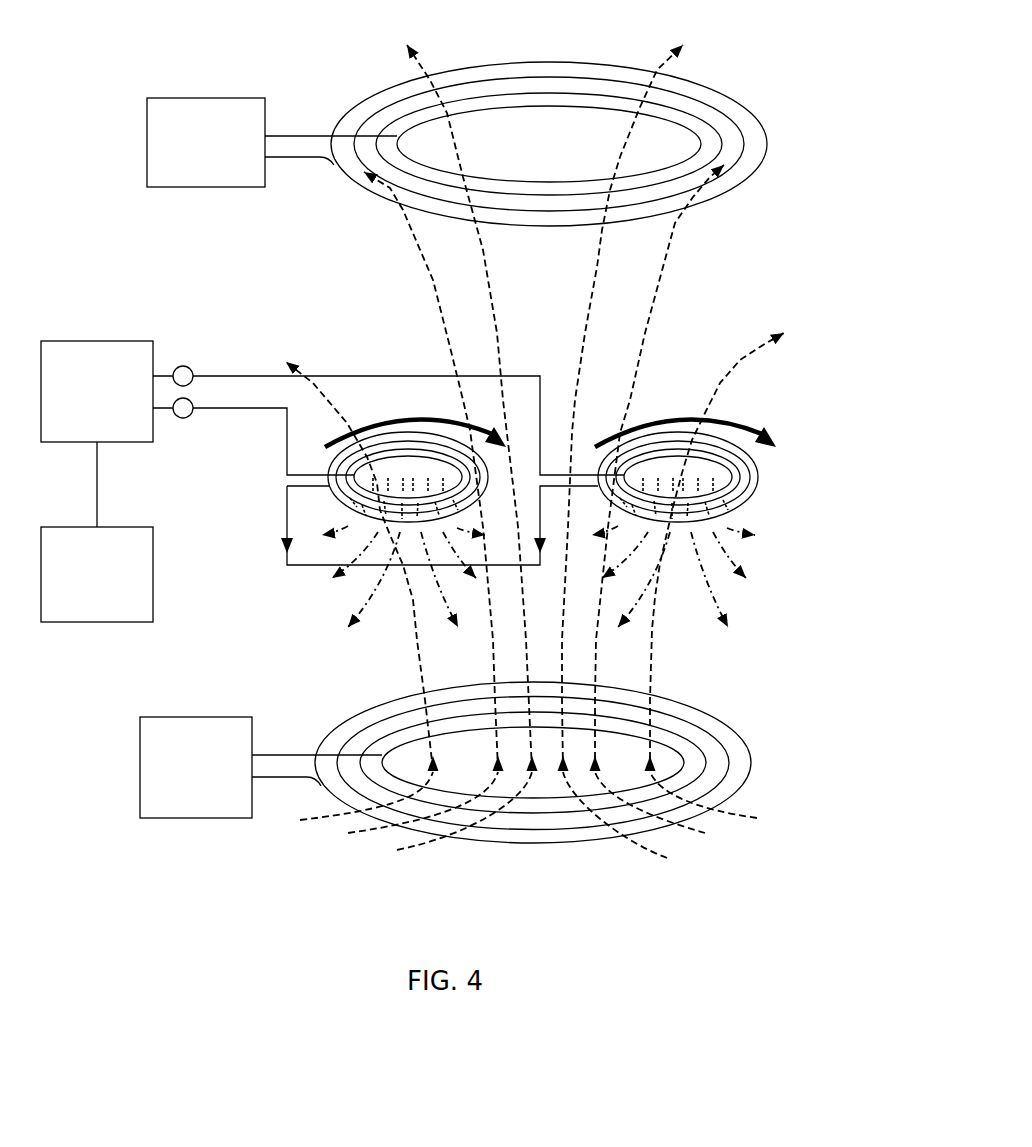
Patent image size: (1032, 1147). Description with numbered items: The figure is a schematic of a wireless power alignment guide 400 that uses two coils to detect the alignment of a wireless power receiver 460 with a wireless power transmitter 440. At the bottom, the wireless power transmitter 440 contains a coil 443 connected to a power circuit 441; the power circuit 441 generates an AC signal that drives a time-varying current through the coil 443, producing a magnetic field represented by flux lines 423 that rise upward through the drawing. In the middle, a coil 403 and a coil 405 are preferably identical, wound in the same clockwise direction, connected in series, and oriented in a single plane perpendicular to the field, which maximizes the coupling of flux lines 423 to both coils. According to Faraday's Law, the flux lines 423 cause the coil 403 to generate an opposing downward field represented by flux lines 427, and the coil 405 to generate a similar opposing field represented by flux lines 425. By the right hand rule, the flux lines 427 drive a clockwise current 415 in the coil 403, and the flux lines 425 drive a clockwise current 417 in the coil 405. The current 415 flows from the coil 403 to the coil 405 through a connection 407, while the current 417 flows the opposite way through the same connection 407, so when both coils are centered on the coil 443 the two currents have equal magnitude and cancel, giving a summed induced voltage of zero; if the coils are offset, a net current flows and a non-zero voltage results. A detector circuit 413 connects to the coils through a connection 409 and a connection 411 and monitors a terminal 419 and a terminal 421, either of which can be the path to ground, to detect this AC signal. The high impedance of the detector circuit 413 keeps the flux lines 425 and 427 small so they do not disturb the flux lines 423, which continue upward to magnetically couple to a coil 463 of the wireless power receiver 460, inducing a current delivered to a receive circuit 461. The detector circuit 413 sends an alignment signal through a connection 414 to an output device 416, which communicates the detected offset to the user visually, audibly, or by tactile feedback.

The wireless power alignment guide 400 is at (150, 296).
The coil 403 is at (340, 505).
The coil 405 is at (756, 496).
The connection 407 is at (283, 540).
The connection 409 is at (241, 410).
The connection 411 is at (232, 376).
The detector circuit 413 is at (142, 443).
The connection 414 is at (97, 504).
The current 415 is at (372, 420).
The output device 416 is at (154, 572).
The current 417 is at (666, 420).
The terminal 419 is at (183, 420).
The terminal 421 is at (184, 365).
The flux lines 423 is at (667, 673).
The flux lines 425 is at (723, 584).
The flux lines 427 is at (354, 586).
The wireless power transmitter 440 is at (524, 753).
The power circuit 441 is at (223, 820).
The coil 443 is at (750, 784).
The wireless power receiver 460 is at (535, 139).
The receive circuit 461 is at (214, 188).
The coil 463 is at (754, 186).